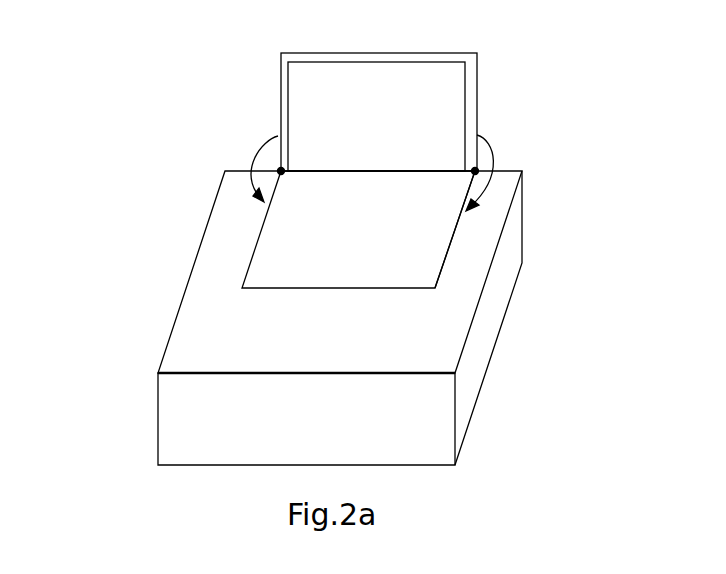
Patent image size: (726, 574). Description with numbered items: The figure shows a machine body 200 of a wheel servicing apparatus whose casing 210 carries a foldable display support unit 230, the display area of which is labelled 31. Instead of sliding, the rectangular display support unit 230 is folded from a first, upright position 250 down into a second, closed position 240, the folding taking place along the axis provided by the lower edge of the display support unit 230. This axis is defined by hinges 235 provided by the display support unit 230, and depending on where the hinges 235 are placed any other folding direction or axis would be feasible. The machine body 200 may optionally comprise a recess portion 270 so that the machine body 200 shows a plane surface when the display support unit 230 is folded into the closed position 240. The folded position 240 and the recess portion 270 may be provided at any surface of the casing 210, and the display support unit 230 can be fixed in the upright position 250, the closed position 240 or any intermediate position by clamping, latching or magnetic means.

The machine body 200 is at (320, 241).
The casing 210 is at (173, 418).
The second, closed position 240 is at (273, 252).
The recess portion 270 is at (456, 237).
The display support unit 230 is at (395, 94).
The first, upright position 250 is at (306, 91).
The display screen 31 is at (376, 116).
The hinges 235 is at (282, 128).